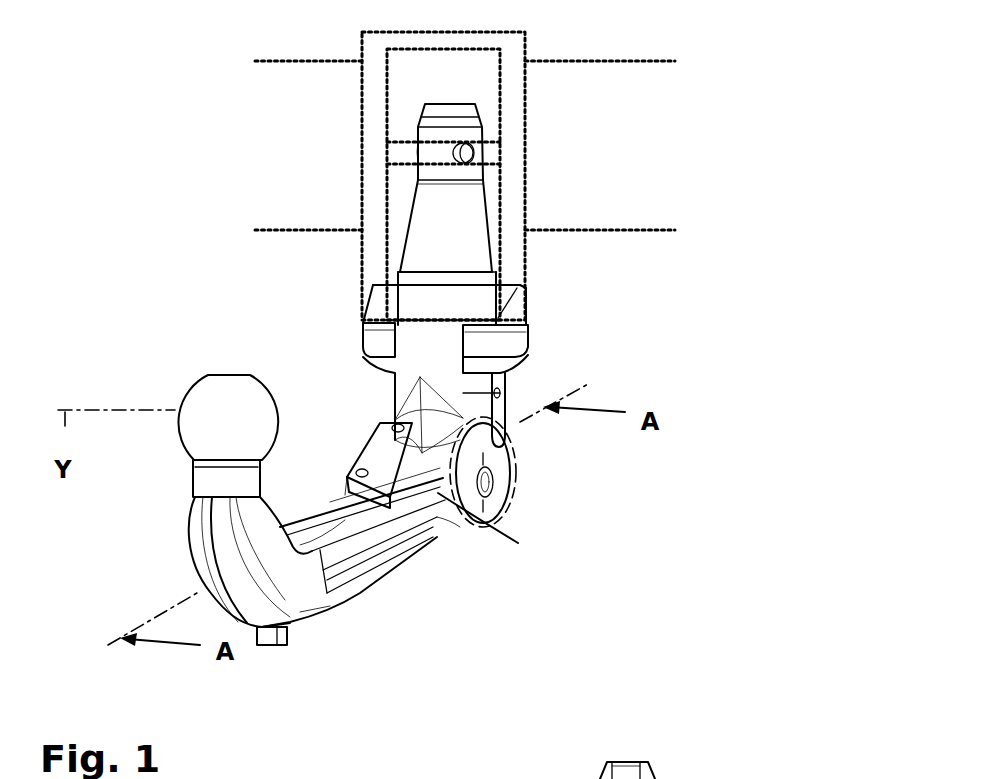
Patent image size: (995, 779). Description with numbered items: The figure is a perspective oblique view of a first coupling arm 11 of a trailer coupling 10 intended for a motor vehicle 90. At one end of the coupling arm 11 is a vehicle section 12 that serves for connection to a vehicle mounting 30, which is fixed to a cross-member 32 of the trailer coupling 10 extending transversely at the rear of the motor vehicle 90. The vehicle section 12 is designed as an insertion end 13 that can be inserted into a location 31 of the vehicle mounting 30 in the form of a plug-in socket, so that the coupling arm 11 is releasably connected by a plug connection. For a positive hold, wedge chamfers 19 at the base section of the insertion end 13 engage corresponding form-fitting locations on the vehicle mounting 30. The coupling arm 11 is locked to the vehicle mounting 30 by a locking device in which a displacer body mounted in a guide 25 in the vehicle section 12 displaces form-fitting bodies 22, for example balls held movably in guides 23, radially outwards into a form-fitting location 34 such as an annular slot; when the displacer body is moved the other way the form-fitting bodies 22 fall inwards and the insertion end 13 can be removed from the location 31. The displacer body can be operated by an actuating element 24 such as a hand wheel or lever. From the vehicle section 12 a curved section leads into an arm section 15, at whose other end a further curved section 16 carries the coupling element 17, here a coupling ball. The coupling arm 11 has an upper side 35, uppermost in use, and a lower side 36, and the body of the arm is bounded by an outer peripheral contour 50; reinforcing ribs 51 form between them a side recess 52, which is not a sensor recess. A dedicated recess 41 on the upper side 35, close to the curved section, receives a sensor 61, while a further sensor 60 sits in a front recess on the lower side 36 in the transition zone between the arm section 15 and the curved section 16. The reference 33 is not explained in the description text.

The trailer coupling 10 is at (802, 120).
The coupling arm 11 is at (362, 600).
The vehicle section 12 is at (485, 215).
The insertion end 13 is at (485, 258).
The arm section 15 is at (395, 570).
The curved section 16 is at (200, 545).
The coupling element 17 is at (205, 390).
The wedge chamfers 19 is at (365, 328).
The form-fitting bodies 22 is at (572, 773).
The guides 23 is at (691, 773).
The actuating element 24 is at (517, 515).
The guide 25 is at (628, 765).
The vehicle mounting 30 is at (520, 106).
The location 31 is at (395, 108).
The cross-member 32 is at (625, 60).
The bolt receptacle 33 is at (518, 300).
The form-fitting location 34 is at (492, 152).
The upper side 35 is at (325, 520).
The lower side 36 is at (425, 565).
The recess 41 is at (345, 495).
The outer peripheral contour 50 is at (330, 605).
The reinforcing ribs 51 is at (463, 532).
The side recess 52 is at (455, 545).
The sensor 60 is at (292, 633).
The sensor 61 is at (383, 445).
The motor vehicle 90 is at (532, 44).